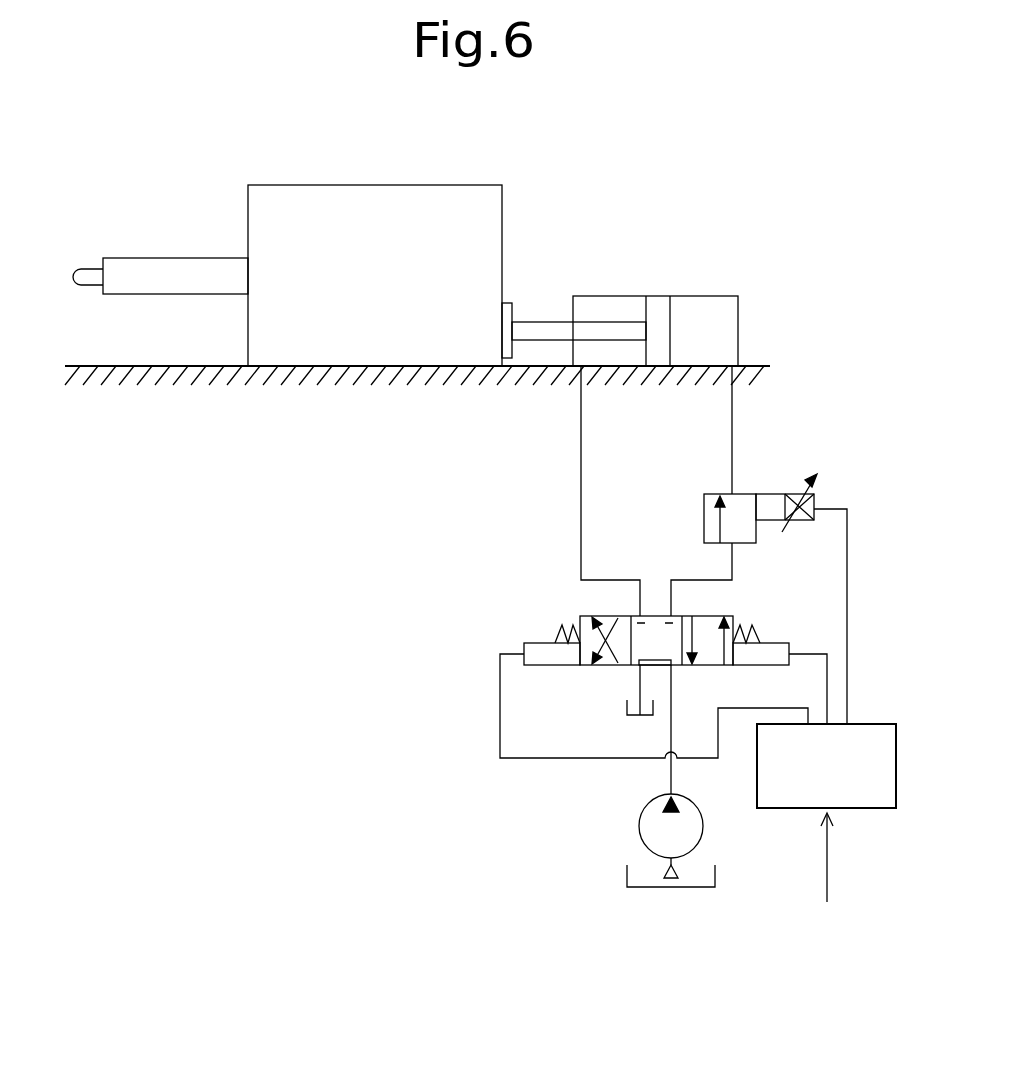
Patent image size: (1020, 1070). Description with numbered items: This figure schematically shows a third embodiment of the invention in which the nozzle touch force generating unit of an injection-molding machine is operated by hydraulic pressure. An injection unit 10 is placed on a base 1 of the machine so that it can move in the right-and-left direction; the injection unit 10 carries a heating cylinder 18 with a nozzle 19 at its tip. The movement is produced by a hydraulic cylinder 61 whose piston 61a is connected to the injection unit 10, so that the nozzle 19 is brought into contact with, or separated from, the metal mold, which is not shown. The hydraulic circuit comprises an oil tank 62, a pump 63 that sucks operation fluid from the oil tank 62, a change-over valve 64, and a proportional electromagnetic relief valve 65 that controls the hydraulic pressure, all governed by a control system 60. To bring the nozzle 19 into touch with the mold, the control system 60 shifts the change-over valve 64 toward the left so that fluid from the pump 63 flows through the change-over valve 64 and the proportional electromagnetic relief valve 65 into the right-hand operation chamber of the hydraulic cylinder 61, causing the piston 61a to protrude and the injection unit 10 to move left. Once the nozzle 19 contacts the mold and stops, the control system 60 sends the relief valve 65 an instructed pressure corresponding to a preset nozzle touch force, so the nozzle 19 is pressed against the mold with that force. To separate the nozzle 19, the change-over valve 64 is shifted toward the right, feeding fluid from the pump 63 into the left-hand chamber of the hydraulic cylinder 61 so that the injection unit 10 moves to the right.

The base 1 is at (224, 383).
The injection unit 10 is at (373, 185).
The heating cylinder 18 is at (182, 265).
The nozzle 19 is at (85, 268).
The hydraulic cylinder 61 is at (703, 297).
The piston 61a is at (550, 322).
The oil tank 62 is at (627, 709).
The pump 63 is at (640, 818).
The change-over valve 64 is at (607, 617).
The proportional electromagnetic relief valve 65 is at (704, 512).
The control system 60 is at (853, 808).